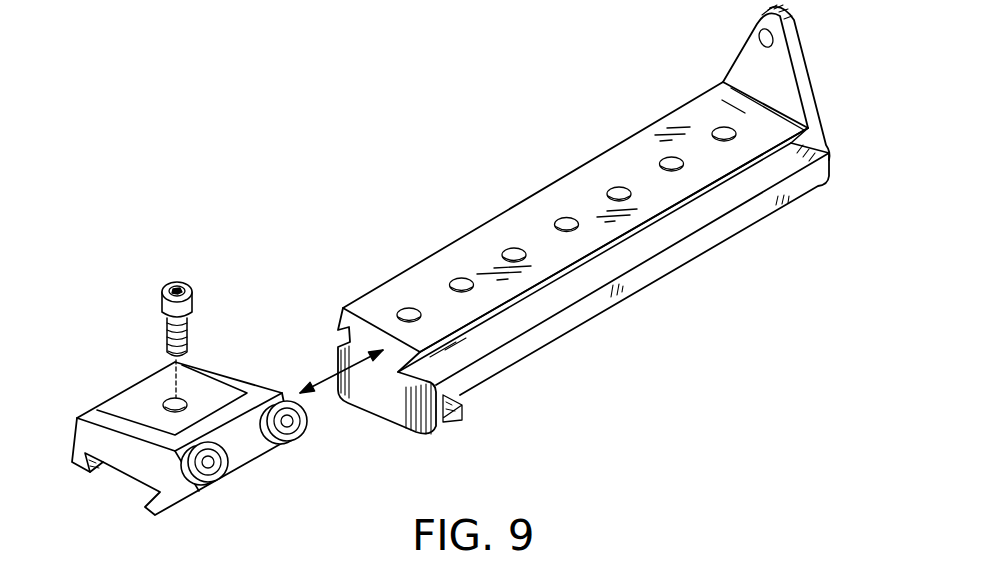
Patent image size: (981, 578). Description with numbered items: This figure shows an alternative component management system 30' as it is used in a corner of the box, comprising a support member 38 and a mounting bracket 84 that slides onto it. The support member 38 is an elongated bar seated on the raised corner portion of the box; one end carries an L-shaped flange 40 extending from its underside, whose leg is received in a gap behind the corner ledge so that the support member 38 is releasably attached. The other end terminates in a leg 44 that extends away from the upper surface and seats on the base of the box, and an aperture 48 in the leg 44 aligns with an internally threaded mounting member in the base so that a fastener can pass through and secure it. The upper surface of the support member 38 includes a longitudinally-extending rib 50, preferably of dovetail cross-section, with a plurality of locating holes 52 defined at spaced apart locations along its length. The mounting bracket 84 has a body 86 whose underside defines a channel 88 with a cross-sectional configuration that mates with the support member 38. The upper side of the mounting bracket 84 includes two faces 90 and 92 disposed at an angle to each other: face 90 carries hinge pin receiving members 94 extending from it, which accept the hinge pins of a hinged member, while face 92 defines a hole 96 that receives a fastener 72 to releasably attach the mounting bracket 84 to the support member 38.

The alternative component management system 30' is at (607, 234).
The support member 38 is at (648, 303).
The L-shaped flange 40 is at (454, 420).
The leg 44 is at (812, 83).
The aperture 48 is at (760, 40).
The longitudinally-extending rib 50 is at (705, 192).
The locating holes 52 is at (511, 252).
The fastener 72 is at (193, 304).
The mounting bracket 84 is at (130, 307).
The body 86 is at (177, 507).
The channel 88 is at (118, 485).
The face 90 is at (248, 450).
The face 92 is at (128, 402).
The hinge pin receiving members 94 is at (222, 468).
The hole 96 is at (175, 398).